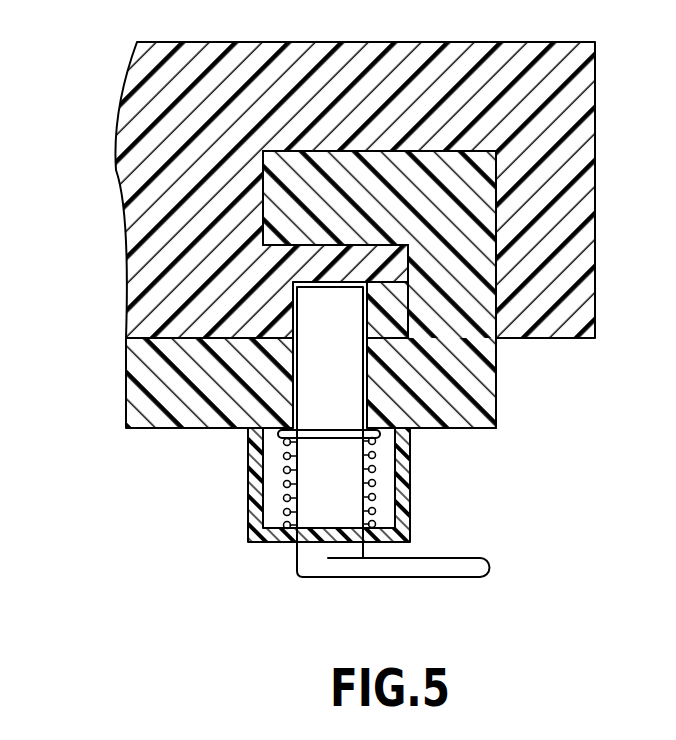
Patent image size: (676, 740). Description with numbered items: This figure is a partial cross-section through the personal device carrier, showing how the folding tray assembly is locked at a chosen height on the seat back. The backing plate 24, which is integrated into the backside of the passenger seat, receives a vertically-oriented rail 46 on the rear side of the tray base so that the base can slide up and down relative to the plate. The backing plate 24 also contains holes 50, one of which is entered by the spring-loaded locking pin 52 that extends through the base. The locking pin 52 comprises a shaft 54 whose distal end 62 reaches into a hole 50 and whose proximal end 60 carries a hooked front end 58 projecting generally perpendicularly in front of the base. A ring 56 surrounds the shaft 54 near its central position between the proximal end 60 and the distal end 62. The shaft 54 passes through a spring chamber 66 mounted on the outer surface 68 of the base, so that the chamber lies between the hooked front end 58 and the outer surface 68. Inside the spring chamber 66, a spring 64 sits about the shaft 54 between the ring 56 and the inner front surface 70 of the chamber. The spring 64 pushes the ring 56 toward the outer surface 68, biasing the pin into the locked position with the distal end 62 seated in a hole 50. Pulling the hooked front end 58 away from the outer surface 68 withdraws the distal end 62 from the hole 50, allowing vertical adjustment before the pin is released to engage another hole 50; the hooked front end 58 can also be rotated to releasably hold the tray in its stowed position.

The backing plate 24 is at (560, 107).
The vertically-oriented rail 46 is at (480, 375).
The holes 50 is at (293, 300).
The spring-loaded locking pin 52 is at (328, 538).
The shaft 54 is at (262, 444).
The ring 56 is at (337, 433).
The hooked front end 58 is at (440, 568).
The proximal end 60 is at (338, 566).
The distal end 62 is at (327, 295).
The spring 64 is at (290, 498).
The spring chamber 66 is at (402, 480).
The outer surface 68 is at (463, 430).
The inner front surface 70 is at (377, 528).